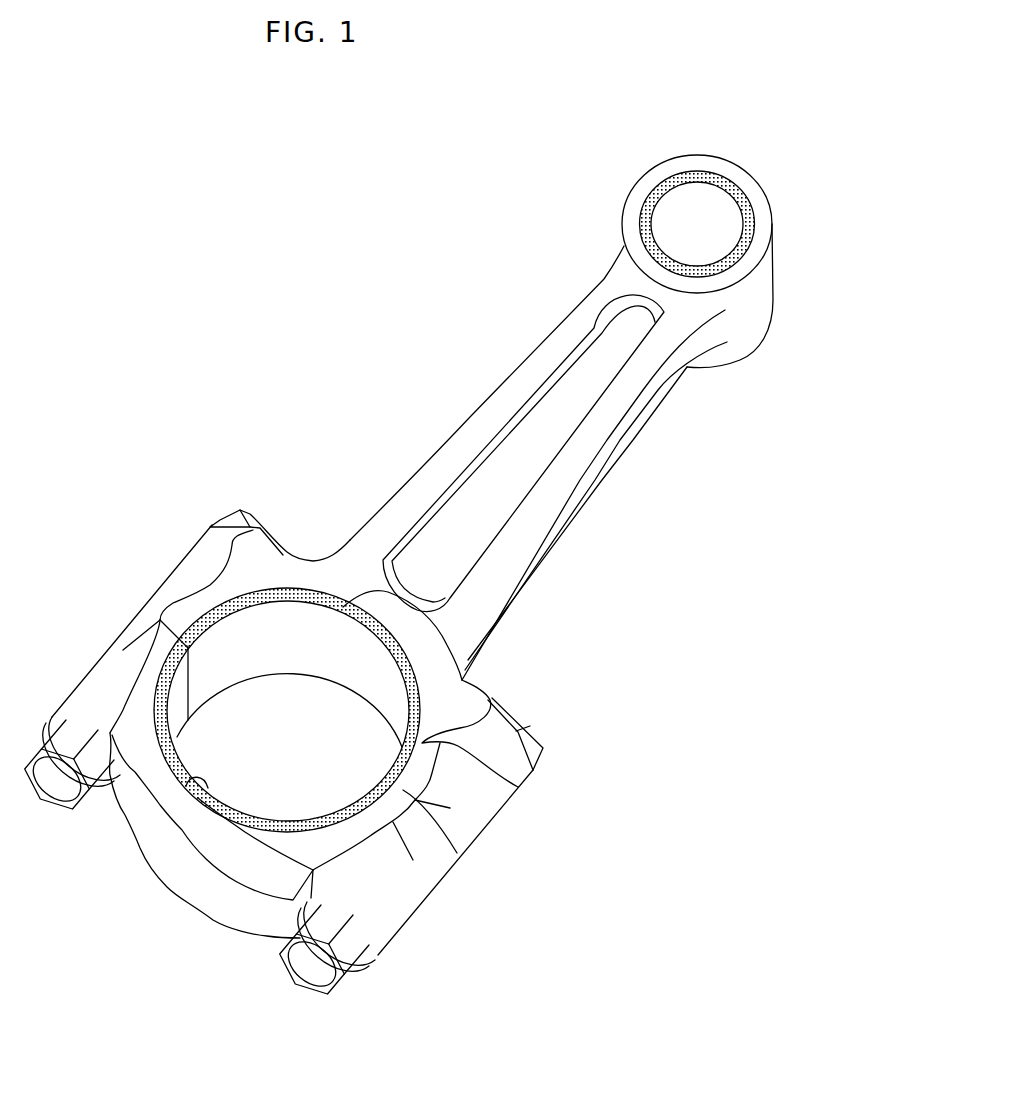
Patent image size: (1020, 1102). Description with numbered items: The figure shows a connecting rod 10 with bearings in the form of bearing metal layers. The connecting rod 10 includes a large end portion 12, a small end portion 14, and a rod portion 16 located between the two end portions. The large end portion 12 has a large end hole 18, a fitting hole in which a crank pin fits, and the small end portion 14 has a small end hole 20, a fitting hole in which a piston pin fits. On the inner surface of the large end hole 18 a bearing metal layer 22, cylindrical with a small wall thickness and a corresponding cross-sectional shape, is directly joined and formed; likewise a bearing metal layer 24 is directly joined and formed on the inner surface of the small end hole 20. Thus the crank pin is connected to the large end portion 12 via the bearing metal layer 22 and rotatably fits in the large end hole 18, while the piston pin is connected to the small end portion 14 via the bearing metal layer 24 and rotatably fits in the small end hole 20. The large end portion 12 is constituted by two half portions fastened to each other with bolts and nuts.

The connecting rod 10 is at (404, 393).
The large end portion 12 is at (193, 904).
The small end portion 14 is at (676, 158).
The rod portion 16 is at (582, 503).
The large end hole 18 is at (196, 803).
The small end hole 20 is at (740, 242).
The bearing metal layer 22 is at (518, 787).
The bearing metal layer 24 is at (716, 176).